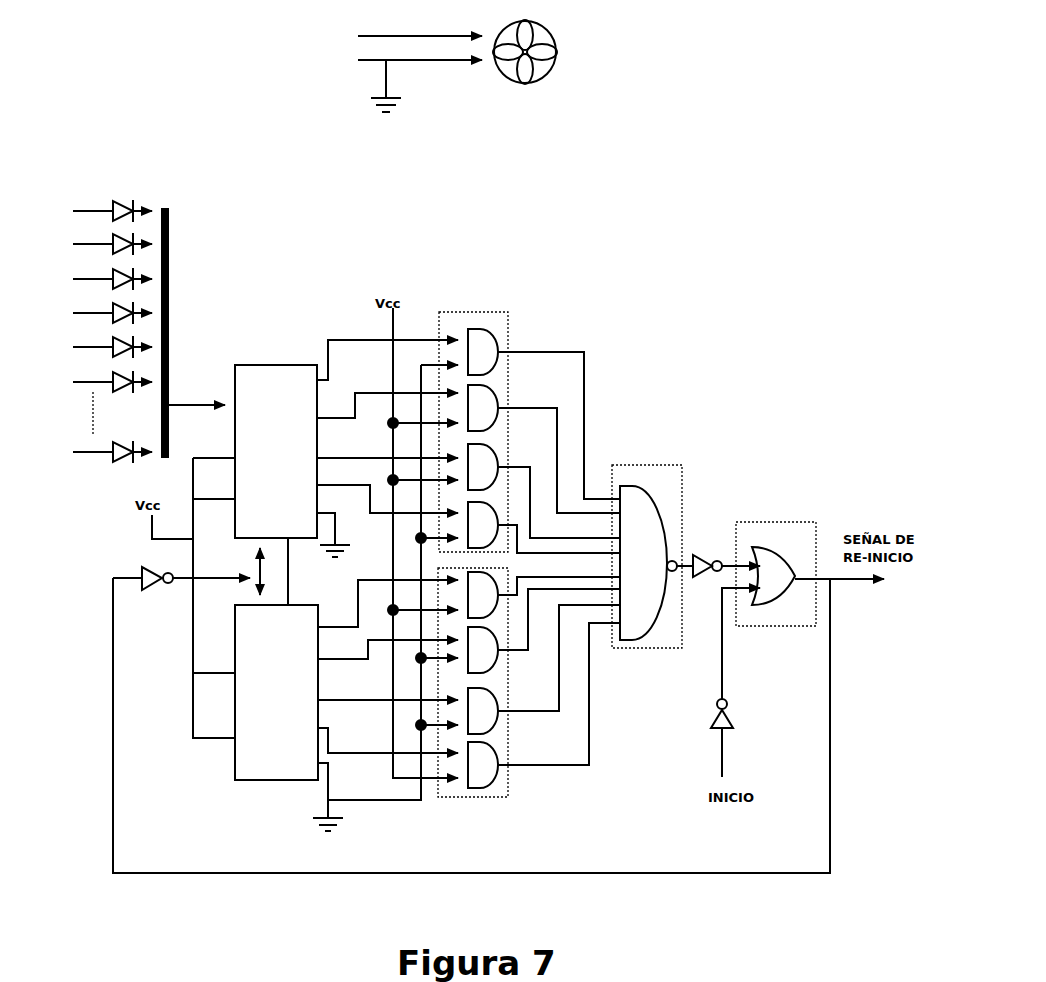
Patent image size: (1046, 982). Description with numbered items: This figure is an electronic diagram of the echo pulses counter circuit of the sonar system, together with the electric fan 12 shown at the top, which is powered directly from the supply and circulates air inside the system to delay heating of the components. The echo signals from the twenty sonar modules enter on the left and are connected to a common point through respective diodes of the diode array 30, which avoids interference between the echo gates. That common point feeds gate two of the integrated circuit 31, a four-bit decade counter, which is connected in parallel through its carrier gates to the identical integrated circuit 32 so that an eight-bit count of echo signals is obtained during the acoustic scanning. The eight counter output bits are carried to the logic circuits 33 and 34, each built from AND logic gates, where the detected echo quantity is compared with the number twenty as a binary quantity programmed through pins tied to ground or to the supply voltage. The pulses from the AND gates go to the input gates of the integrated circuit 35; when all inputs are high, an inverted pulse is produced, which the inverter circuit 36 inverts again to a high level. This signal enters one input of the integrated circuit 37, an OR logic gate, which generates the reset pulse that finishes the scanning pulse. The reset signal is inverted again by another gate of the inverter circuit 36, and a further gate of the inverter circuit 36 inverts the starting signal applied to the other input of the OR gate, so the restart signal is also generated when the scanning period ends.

The electric fan 12 is at (488, 71).
The diode array 30 is at (88, 318).
The integrated circuit 31 is at (276, 440).
The integrated circuit 32 is at (276, 705).
The logic circuit 33 is at (473, 420).
The logic circuit 34 is at (473, 700).
The integrated circuit 35 is at (647, 543).
The inverter circuit 36 is at (130, 562).
The integrated circuit 37 is at (776, 565).